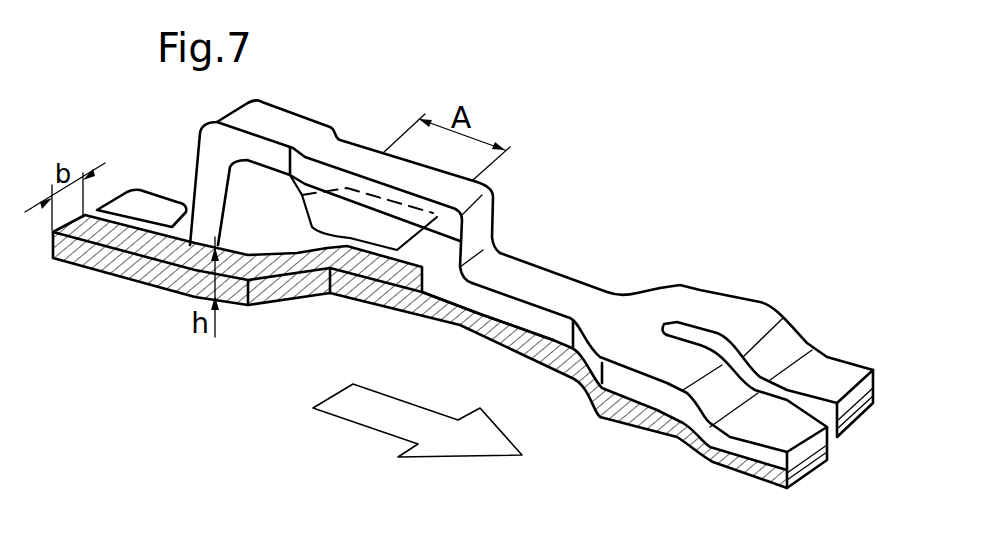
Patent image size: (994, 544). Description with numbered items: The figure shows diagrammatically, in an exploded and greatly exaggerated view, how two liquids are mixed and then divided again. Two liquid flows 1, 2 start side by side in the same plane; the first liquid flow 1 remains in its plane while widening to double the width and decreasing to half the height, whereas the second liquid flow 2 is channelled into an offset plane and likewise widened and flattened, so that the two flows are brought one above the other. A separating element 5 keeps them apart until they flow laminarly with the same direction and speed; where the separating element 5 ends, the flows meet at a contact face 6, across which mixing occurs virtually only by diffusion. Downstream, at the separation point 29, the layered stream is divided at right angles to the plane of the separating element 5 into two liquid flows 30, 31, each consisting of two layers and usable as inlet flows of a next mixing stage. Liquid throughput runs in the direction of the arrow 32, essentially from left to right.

The liquid flow 1 is at (89, 233).
The liquid flow 2 is at (133, 203).
The separating element 5 is at (372, 237).
The contact face 6 is at (528, 338).
The separation point 29 is at (630, 312).
The liquid flow 30 is at (822, 373).
The liquid flow 31 is at (767, 432).
The arrow 32 is at (470, 442).